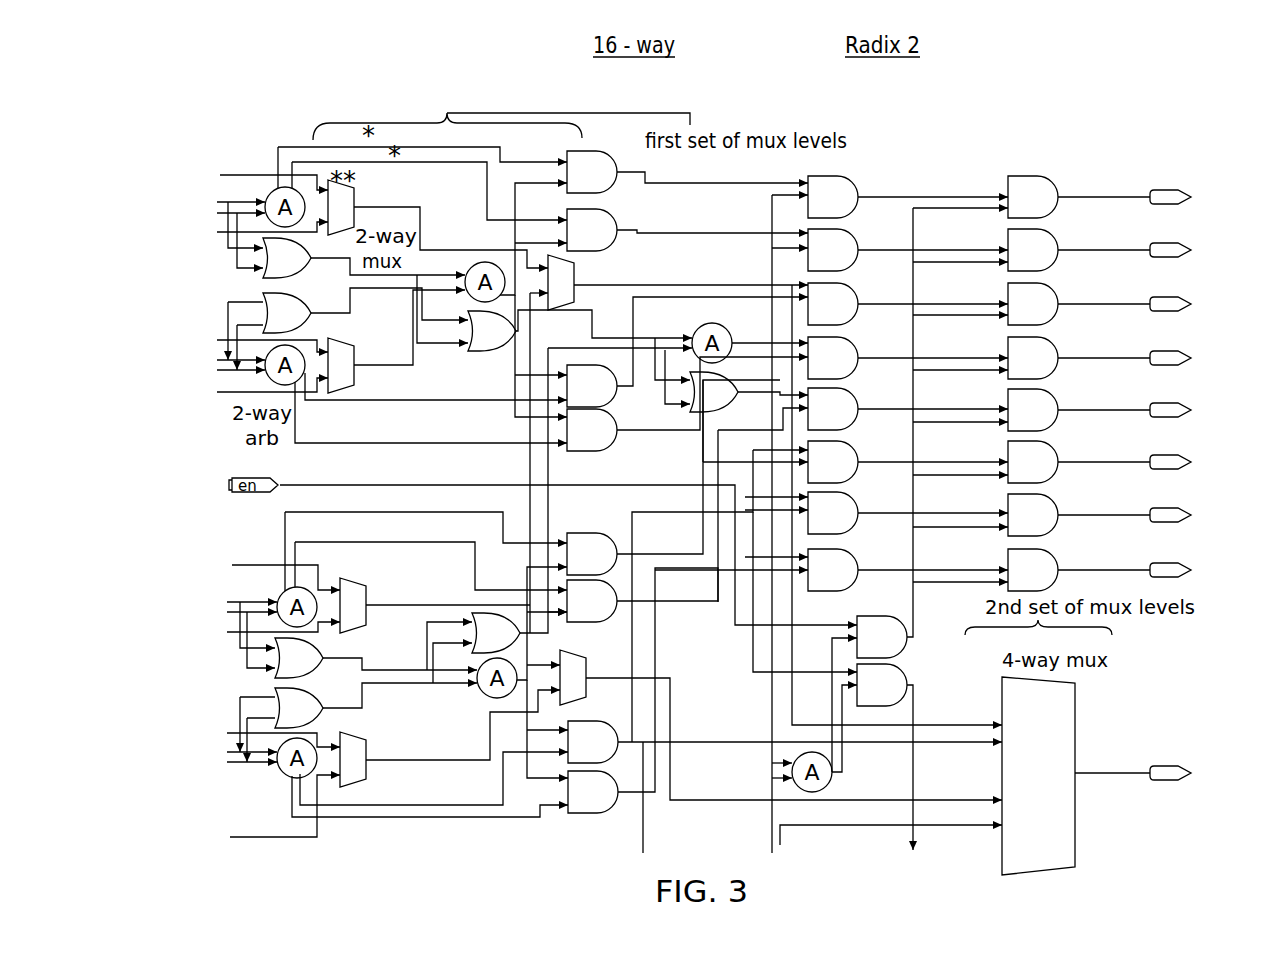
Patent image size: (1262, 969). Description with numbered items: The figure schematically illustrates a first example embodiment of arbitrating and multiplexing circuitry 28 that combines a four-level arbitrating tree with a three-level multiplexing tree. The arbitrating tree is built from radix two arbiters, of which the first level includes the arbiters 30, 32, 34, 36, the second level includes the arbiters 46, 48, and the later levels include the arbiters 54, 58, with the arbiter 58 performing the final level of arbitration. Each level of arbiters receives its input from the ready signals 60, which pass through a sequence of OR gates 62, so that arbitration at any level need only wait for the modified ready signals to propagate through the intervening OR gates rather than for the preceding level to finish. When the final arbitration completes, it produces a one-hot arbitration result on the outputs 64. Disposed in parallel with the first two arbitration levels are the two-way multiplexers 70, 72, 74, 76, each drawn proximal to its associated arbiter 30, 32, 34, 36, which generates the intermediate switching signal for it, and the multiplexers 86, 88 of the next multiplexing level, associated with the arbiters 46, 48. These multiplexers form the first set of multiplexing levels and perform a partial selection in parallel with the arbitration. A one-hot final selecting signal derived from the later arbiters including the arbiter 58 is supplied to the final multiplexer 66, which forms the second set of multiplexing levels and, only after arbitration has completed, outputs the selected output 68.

The arbitrating and multiplexing circuitry 28 is at (1122, 140).
The arbiter 30 is at (268, 199).
The arbiter 32 is at (267, 377).
The arbiter 34 is at (278, 598).
The arbiter 36 is at (285, 775).
The arbiter 46 is at (482, 262).
The arbiter 48 is at (487, 696).
The arbiter 54 is at (696, 330).
The arbiter 58 is at (798, 756).
The ready signals 60 is at (226, 204).
The OR gates 62 is at (306, 273).
The outputs 64 is at (1172, 205).
The final multiplexer 66 is at (1080, 806).
The selected output 68 is at (1170, 765).
The multiplexer 70 is at (356, 202).
The multiplexer 72 is at (355, 357).
The multiplexer 74 is at (370, 599).
The multiplexer 76 is at (370, 753).
The multiplexer 86 is at (578, 281).
The multiplexer 88 is at (590, 675).